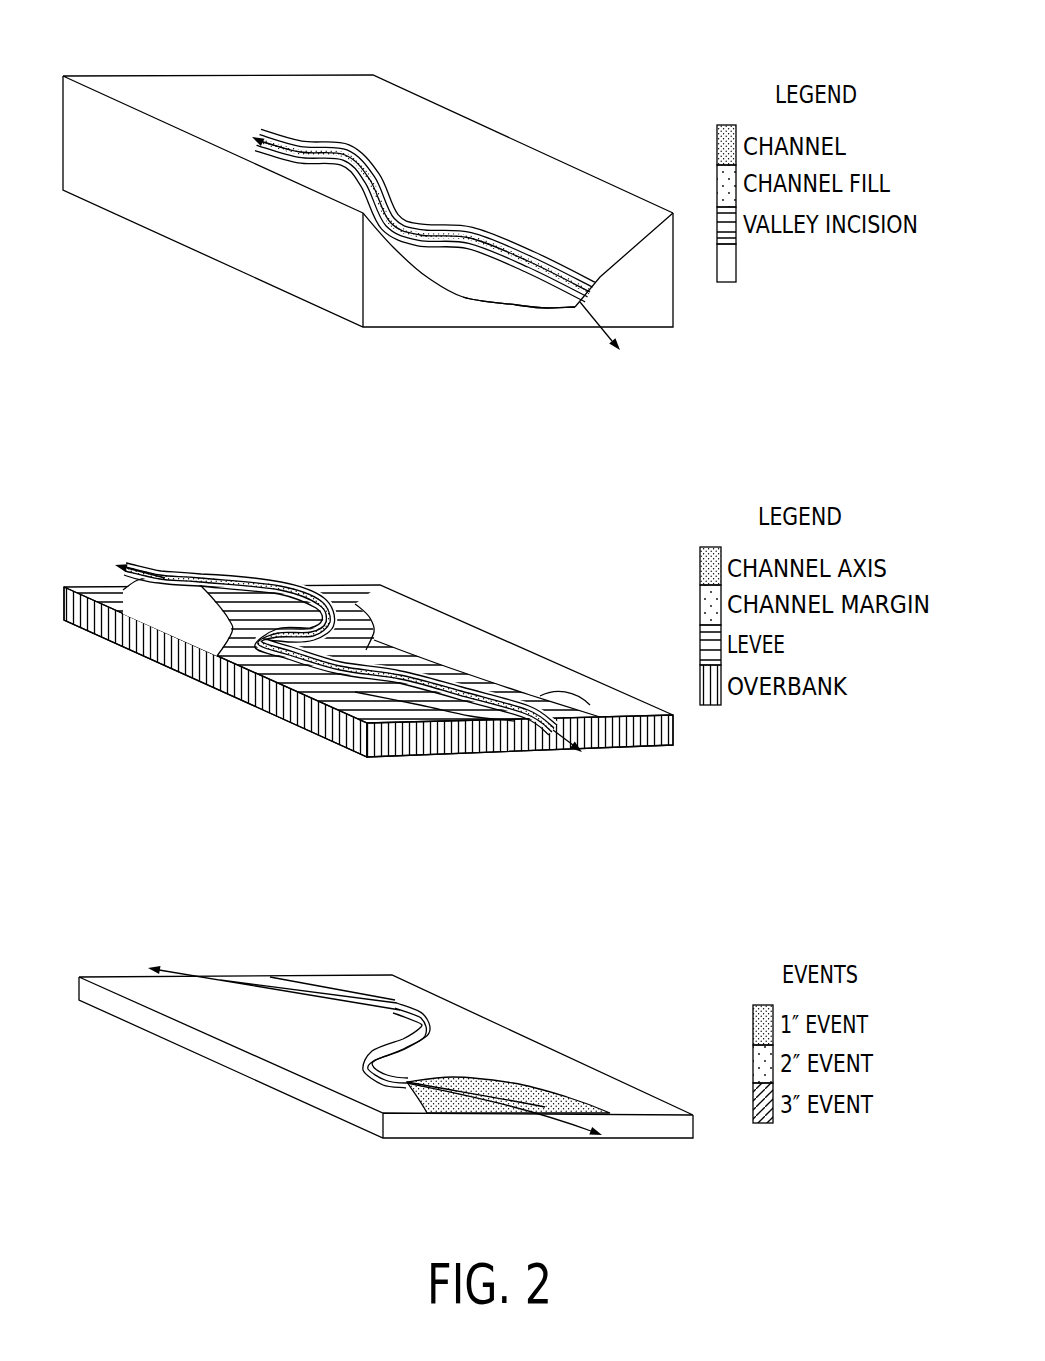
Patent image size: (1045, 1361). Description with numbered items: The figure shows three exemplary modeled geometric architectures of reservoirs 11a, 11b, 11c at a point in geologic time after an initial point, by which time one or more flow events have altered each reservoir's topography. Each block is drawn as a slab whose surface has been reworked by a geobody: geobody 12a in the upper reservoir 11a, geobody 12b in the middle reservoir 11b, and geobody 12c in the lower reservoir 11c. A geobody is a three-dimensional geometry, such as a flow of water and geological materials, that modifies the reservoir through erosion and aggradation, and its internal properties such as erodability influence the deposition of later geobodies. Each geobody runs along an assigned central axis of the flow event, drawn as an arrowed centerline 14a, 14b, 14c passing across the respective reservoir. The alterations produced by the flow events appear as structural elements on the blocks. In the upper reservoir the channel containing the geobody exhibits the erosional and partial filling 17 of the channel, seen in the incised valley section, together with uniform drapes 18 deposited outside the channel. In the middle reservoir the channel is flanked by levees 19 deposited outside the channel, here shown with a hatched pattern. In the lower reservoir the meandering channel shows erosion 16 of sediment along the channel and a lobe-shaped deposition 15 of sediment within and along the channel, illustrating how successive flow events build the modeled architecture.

The reservoir 11a is at (330, 80).
The geobody 12a is at (403, 175).
The centerline 14a is at (590, 317).
The erosional and partial filling 17 is at (522, 298).
The uniform drapes 18 is at (548, 307).
The reservoir 11b is at (437, 560).
The geobody 12b is at (288, 680).
The levees 19 is at (578, 688).
The centerline 14b is at (560, 748).
The reservoir 11c is at (452, 955).
The geobody 12c is at (338, 1065).
The erosion 16 is at (368, 1022).
The deposition 15 is at (464, 1068).
The centerline 14c is at (567, 1122).